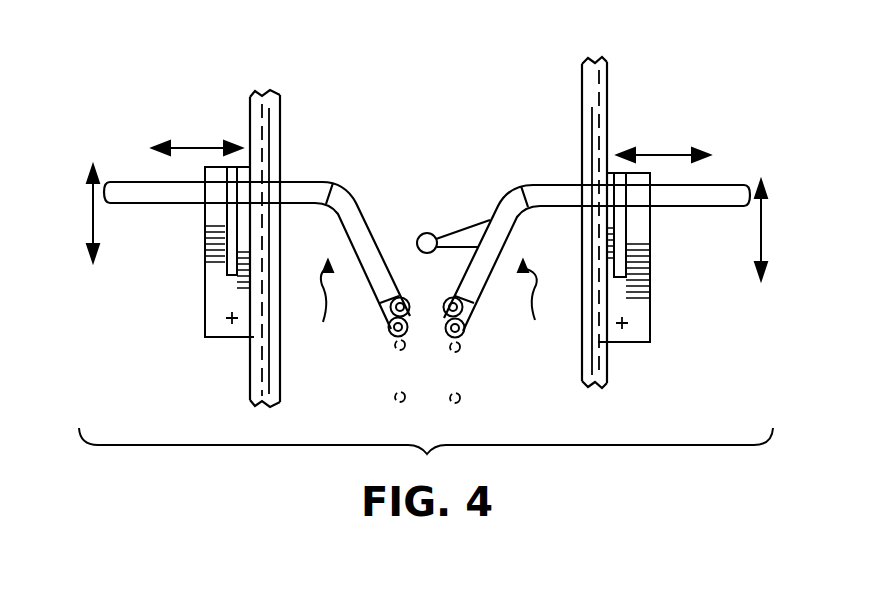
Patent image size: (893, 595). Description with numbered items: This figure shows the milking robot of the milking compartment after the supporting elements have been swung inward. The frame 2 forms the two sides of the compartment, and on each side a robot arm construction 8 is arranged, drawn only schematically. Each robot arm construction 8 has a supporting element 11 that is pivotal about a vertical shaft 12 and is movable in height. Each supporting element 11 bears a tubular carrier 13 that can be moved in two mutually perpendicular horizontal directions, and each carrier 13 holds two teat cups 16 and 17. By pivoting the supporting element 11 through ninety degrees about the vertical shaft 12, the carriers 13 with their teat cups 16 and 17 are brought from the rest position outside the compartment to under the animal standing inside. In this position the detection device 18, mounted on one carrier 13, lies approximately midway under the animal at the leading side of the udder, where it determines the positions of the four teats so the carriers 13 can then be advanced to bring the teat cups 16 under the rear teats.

The frame 2 is at (588, 89).
The robot arm construction 8 is at (428, 300).
The supporting element 11 is at (207, 243).
The vertical shaft 12 is at (227, 315).
The carrier 13 is at (490, 238).
The teat cup 16 is at (388, 333).
The teat cup 17 is at (446, 292).
The detection device 18 is at (430, 231).